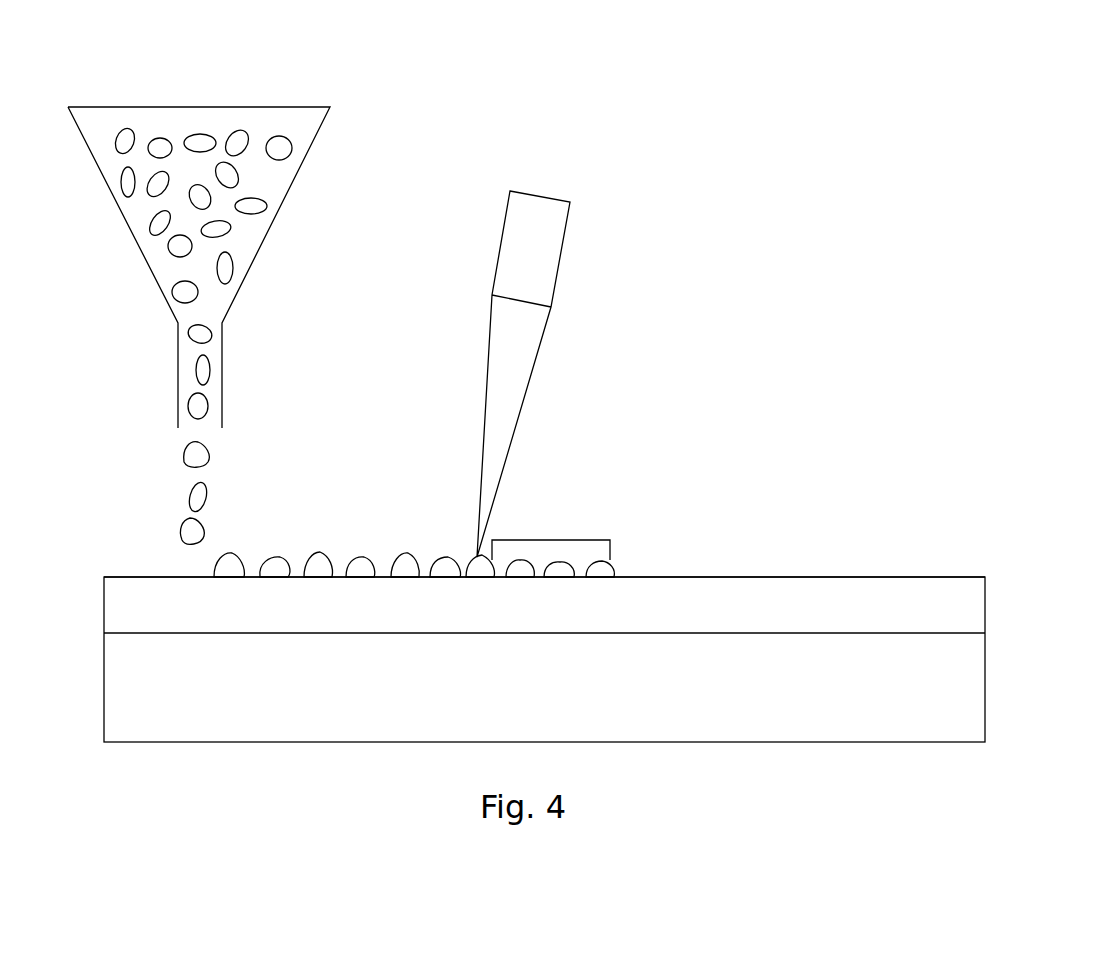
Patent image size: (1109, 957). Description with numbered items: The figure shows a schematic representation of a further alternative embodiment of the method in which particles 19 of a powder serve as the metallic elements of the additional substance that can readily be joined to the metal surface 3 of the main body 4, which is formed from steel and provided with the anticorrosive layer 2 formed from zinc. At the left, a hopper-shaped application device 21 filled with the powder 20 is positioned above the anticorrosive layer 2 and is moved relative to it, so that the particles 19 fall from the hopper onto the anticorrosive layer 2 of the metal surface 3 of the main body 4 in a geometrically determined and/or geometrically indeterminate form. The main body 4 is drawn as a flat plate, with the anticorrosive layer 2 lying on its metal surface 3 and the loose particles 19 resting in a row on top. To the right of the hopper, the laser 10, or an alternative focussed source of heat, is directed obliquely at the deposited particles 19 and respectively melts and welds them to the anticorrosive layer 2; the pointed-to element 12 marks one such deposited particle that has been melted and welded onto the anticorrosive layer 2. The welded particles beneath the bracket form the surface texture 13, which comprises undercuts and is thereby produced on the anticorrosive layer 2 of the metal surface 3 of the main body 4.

The anticorrosive layer 2 is at (697, 603).
The metal surface 3 is at (770, 637).
The main body 4 is at (850, 673).
The laser 10 is at (533, 372).
The deposited particle 12 is at (578, 567).
The surface texture 13 is at (552, 540).
The particles 19 is at (210, 456).
The powder 20 is at (242, 243).
The application device 21 is at (262, 245).